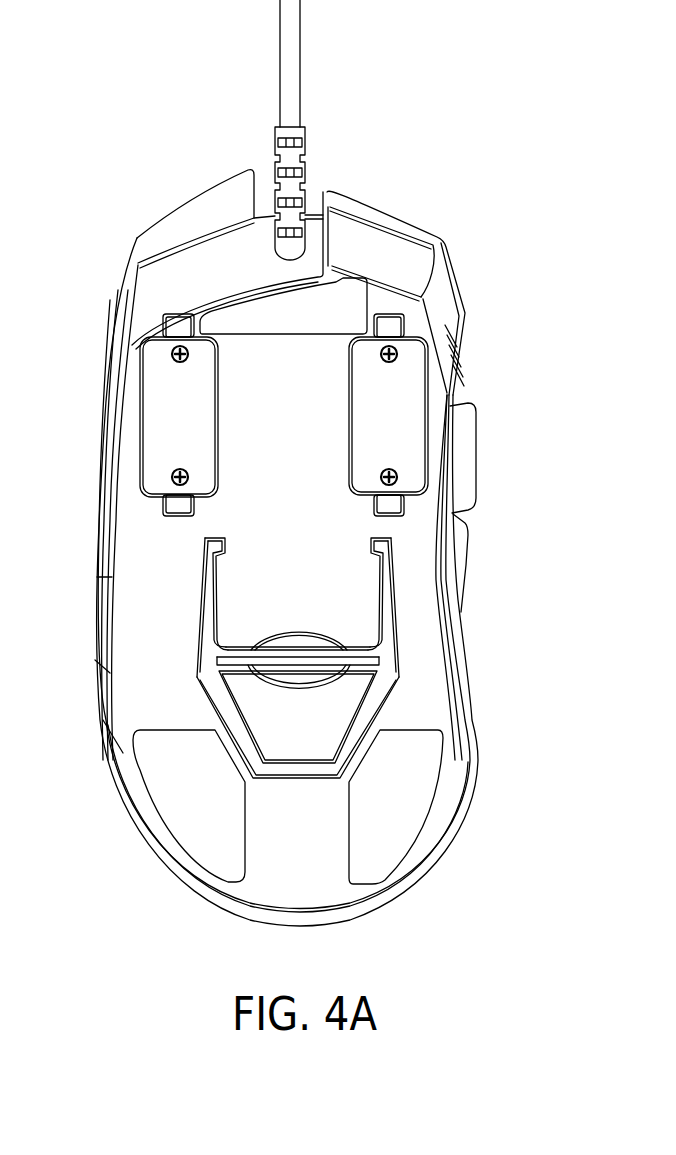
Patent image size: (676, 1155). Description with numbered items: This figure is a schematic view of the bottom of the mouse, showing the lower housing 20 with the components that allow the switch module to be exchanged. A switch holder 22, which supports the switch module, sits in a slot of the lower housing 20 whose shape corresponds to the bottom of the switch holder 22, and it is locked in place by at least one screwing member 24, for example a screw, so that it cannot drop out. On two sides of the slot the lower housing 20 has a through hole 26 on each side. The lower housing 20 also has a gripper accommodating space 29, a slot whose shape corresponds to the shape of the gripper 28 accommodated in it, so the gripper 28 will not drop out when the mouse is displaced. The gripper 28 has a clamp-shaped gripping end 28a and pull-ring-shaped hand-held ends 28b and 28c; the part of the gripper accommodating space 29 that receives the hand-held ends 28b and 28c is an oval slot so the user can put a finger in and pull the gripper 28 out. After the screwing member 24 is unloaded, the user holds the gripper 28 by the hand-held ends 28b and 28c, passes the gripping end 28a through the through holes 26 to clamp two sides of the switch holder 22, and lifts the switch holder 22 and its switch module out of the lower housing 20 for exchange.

The lower housing 20 is at (145, 615).
The switch holder 22 is at (162, 420).
The screwing member 24 is at (170, 355).
The through hole 26 is at (178, 325).
The gripper 28 is at (399, 658).
The gripping end 28a is at (383, 586).
The hand-held end 28b is at (322, 663).
The hand-held end 28c is at (368, 712).
The gripper accommodating space 29 is at (298, 648).